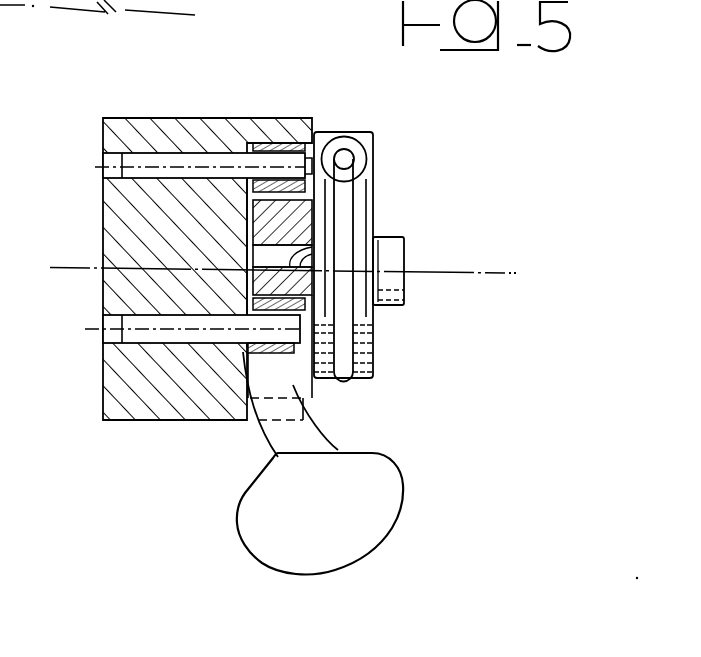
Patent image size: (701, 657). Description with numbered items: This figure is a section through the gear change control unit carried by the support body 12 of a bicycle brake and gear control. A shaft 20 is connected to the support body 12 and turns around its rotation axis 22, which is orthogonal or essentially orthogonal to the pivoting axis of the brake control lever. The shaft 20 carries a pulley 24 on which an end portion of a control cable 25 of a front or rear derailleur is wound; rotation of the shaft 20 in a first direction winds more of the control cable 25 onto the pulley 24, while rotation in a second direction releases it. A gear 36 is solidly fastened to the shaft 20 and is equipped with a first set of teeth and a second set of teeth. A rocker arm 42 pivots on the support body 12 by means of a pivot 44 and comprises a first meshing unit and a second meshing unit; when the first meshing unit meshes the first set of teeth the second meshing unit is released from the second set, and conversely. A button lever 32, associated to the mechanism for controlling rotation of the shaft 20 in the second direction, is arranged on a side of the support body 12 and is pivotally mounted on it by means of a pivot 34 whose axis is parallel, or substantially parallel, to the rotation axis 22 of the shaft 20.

The support body 12 is at (193, 112).
The pivot 44 is at (223, 160).
The rocker arm 42 is at (288, 143).
The shaft 20 is at (308, 233).
The pivot 34 is at (187, 333).
The gear 36 is at (272, 355).
The control cable 25 is at (356, 170).
The pulley 24 is at (355, 254).
The rotation axis 22 is at (453, 273).
The button lever 32 is at (404, 486).